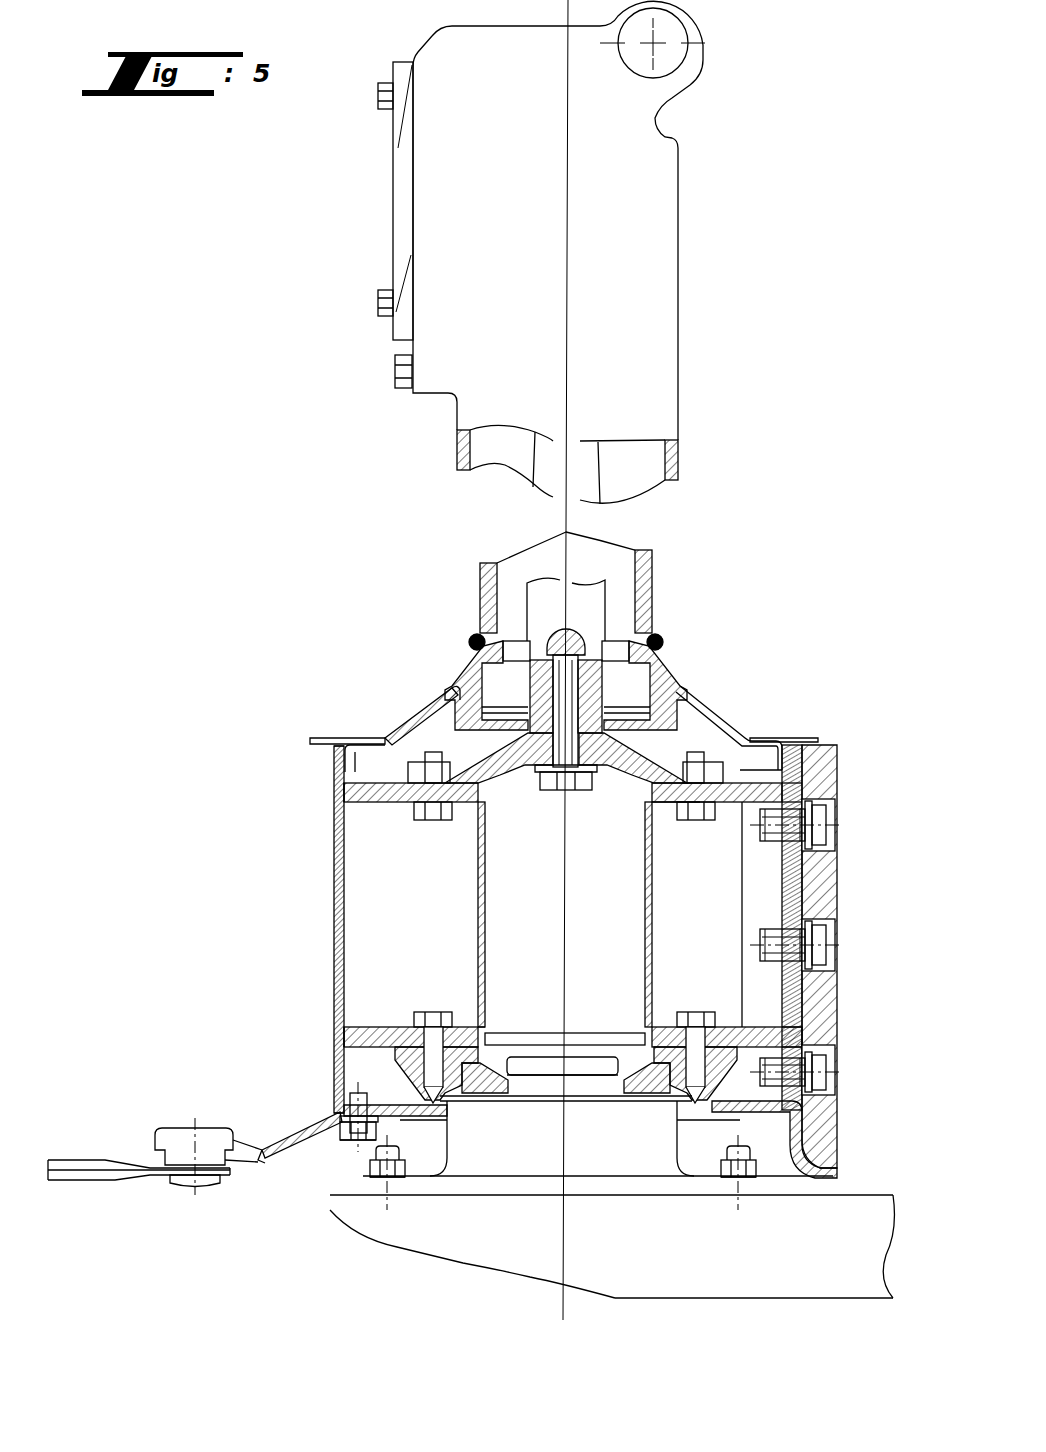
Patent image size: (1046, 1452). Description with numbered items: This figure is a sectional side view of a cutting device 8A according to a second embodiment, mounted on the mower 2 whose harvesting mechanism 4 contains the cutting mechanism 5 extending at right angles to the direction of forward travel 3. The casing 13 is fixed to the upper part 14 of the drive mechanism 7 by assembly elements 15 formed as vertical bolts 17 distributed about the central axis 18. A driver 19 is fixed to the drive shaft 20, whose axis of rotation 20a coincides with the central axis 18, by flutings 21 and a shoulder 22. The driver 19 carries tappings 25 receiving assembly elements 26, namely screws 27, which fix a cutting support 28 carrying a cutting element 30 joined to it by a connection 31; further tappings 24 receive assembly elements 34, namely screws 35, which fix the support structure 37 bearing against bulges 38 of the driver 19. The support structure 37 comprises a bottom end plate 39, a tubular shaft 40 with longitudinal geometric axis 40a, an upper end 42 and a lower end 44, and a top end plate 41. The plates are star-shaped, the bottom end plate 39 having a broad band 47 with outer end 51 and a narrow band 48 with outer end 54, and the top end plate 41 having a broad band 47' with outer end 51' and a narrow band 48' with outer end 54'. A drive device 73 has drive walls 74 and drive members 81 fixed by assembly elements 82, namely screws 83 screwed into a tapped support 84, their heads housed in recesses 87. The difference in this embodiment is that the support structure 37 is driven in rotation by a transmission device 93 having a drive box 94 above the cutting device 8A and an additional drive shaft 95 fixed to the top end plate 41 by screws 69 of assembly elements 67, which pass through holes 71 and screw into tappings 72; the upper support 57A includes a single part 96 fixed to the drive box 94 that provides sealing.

The transmission device 93 is at (683, 211).
The drive box 94 is at (516, 277).
The additional drive shaft 95 is at (598, 617).
The single part 96 is at (720, 713).
The upper support 57A is at (402, 718).
The tappings 72 is at (412, 765).
The narrow band 48' is at (846, 757).
The outer end 51' is at (303, 780).
The outer end 54' is at (851, 786).
The broad band 47' is at (287, 815).
The top end plate 41 is at (373, 802).
The assembly elements 67 is at (432, 821).
The screws 69 is at (680, 806).
The holes 71 is at (728, 800).
The upper end 42 is at (640, 827).
The assembly elements 82 is at (826, 832).
The drive wall 74 is at (333, 855).
The cutting device 8A is at (333, 888).
The tapped support 84 is at (782, 862).
The drive member 81 is at (838, 893).
The support structure 37 is at (478, 906).
The tubular shaft 40 is at (486, 922).
The drive device 73 is at (333, 935).
The recess 87 is at (837, 935).
The broad band 47 is at (301, 1002).
The bottom end plate 39 is at (360, 1027).
The screw 35 is at (423, 1013).
The assembly element 34 is at (470, 992).
The shoulder 22 is at (565, 1040).
The lower end 44 is at (638, 1027).
The narrow band 48 is at (850, 1003).
The direction of forward travel 3 is at (50, 1027).
The outer end 51 is at (302, 1032).
The drive shaft 20 is at (540, 1062).
The flutings 21 is at (566, 1085).
The tapping 24 is at (700, 1063).
The outer end 54 is at (850, 1033).
The bulge 38 is at (400, 1058).
The cutting support 28 is at (262, 1124).
The tapping 25 is at (337, 1107).
The screw 83 is at (834, 1072).
The driver 19 is at (476, 1082).
The drive mechanism 7 is at (845, 1207).
The cutting mechanism 5 is at (878, 1207).
The cutting element 30 is at (78, 1182).
The connection 31 is at (175, 1186).
The assembly element 26 is at (337, 1143).
The screw 27 is at (342, 1158).
The assembly elements 15 is at (372, 1178).
The bolt 17 is at (400, 1180).
The casing 13 is at (525, 1168).
The central axis 18 is at (563, 1274).
The axis of rotation 20a is at (594, 1182).
The longitudinal geometric axis 40a is at (603, 1158).
The upper part 14 is at (774, 1300).
The mower 2 is at (802, 1300).
The harvesting mechanism 4 is at (866, 1300).